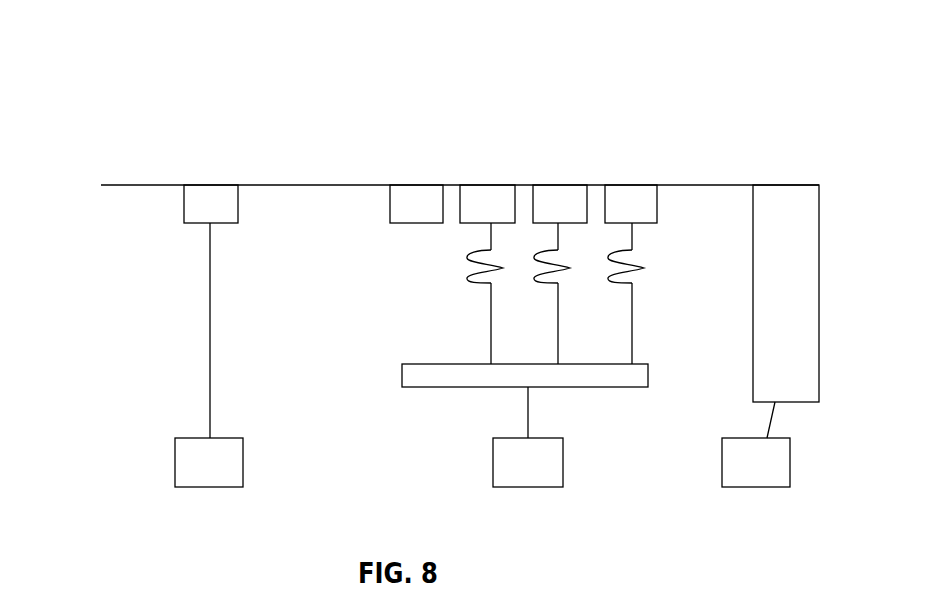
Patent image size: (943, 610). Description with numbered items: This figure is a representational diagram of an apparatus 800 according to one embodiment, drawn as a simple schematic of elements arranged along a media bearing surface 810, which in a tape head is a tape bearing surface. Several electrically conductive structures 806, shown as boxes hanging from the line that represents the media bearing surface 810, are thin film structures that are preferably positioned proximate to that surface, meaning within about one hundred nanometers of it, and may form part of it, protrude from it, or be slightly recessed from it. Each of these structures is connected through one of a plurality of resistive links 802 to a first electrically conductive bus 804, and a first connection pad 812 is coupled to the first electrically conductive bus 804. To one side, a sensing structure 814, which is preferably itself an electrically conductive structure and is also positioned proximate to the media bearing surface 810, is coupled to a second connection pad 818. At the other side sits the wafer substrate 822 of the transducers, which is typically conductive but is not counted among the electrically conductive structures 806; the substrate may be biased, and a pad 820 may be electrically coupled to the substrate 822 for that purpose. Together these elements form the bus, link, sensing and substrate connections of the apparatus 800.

The apparatus 800 is at (101, 136).
The resistive links 802 is at (579, 276).
The first electrically conductive bus 804 is at (401, 377).
The electrically conductive structures 806 is at (617, 185).
The media bearing surface 810 is at (351, 184).
The first connection pad 812 is at (493, 468).
The sensing structure 814 is at (213, 185).
The second connection pad 818 is at (175, 462).
The pad 820 is at (722, 462).
The wafer substrate 822 is at (773, 185).